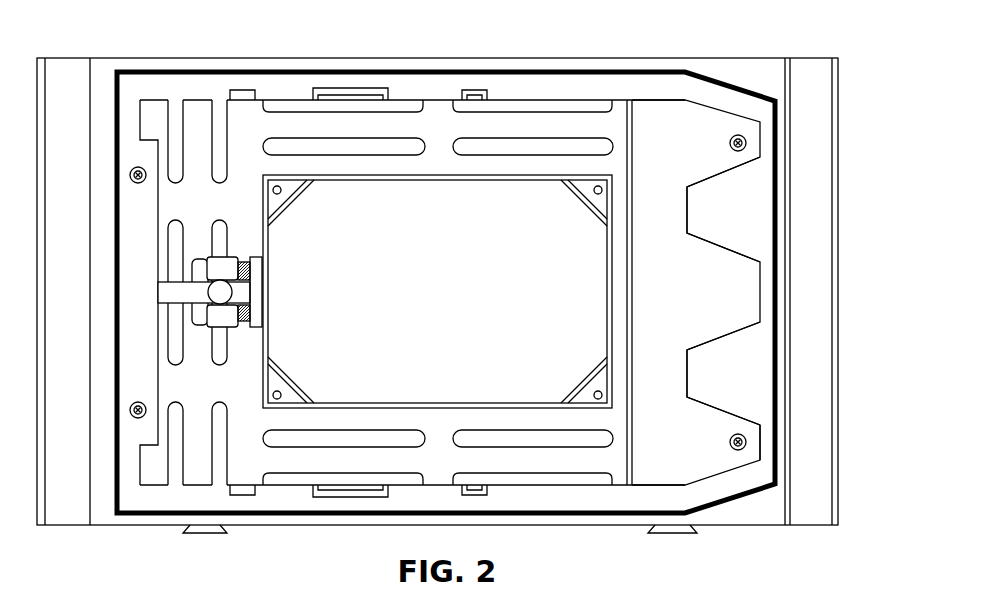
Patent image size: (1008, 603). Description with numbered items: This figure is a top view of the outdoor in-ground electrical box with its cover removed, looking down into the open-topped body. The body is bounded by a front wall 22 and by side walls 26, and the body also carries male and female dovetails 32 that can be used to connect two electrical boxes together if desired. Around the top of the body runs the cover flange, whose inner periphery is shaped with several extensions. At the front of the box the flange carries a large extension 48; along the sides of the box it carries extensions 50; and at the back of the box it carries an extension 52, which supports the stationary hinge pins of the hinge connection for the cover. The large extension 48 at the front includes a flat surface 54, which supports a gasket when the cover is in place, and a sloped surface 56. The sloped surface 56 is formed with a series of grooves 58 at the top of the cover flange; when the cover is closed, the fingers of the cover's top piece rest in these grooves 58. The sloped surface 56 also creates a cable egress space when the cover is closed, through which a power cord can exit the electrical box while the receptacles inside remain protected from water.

The front wall 22 is at (790, 98).
The side walls 26 is at (333, 527).
The male and female dovetails 32 is at (205, 533).
The large extension 48 is at (698, 130).
The extensions 50 is at (408, 96).
The extension 52 is at (148, 140).
The flat surface 54 is at (767, 438).
The sloped surface 56 is at (735, 213).
The grooves 58 is at (773, 140).